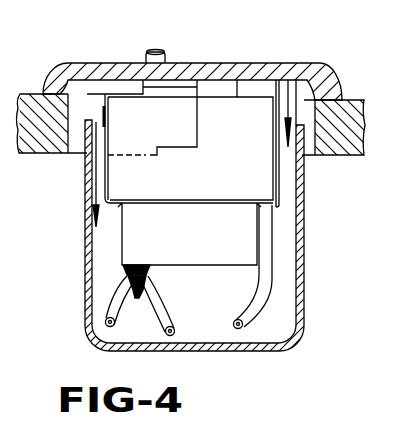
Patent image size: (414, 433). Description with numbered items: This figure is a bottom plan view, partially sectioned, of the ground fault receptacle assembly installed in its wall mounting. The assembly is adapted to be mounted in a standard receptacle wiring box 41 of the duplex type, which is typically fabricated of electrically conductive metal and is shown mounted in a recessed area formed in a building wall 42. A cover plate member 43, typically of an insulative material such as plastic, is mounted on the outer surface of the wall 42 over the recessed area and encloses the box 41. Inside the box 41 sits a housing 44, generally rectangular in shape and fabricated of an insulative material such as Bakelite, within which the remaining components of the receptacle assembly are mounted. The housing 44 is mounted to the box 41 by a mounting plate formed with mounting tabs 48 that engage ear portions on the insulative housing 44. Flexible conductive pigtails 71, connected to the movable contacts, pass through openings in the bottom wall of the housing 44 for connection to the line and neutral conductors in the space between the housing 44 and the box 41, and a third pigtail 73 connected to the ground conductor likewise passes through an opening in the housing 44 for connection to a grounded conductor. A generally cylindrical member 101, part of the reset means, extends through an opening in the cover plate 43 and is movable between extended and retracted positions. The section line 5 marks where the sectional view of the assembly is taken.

The receptacle wiring box 41 is at (304, 250).
The building wall 42 is at (45, 96).
The cover plate member 43 is at (238, 69).
The housing 44 is at (197, 259).
The mounting tabs 48 is at (109, 125).
The flexible conductive pigtails 71 is at (133, 288).
The third pigtail 73 is at (260, 297).
The cylindrical member 101 is at (163, 49).
The section line 5- 5 is at (203, 162).